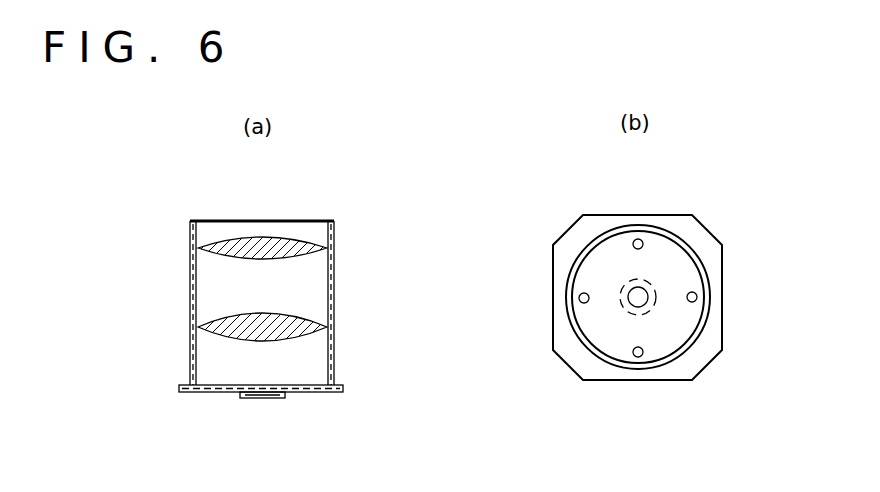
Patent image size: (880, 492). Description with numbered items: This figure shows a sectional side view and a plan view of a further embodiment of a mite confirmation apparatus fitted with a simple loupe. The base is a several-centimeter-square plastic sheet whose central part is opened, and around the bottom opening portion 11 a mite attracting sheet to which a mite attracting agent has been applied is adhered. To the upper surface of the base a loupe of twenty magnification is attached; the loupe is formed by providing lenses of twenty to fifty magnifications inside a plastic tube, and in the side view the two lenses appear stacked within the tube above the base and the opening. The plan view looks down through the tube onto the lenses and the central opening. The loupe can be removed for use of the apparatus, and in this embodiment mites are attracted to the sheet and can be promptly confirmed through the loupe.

The bottom opening portion 11 is at (267, 398).